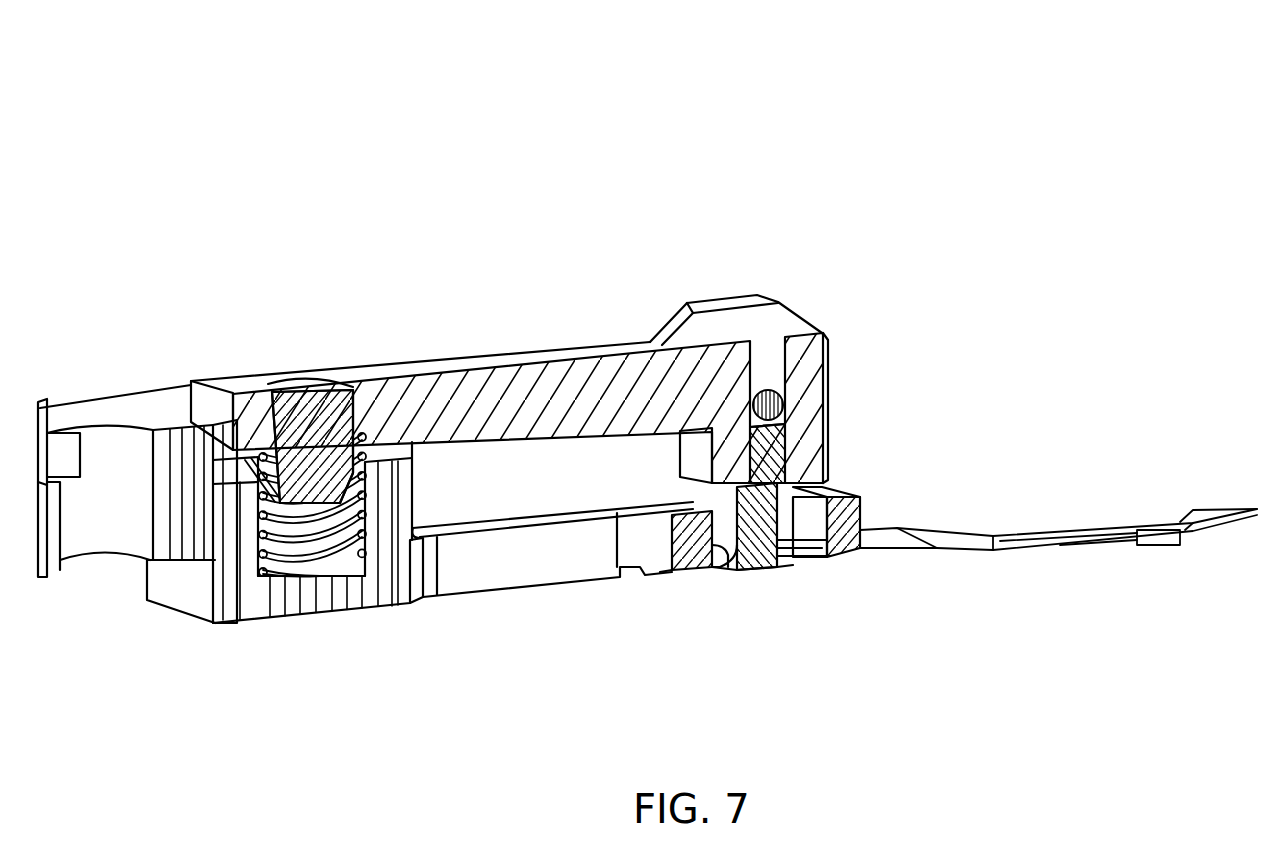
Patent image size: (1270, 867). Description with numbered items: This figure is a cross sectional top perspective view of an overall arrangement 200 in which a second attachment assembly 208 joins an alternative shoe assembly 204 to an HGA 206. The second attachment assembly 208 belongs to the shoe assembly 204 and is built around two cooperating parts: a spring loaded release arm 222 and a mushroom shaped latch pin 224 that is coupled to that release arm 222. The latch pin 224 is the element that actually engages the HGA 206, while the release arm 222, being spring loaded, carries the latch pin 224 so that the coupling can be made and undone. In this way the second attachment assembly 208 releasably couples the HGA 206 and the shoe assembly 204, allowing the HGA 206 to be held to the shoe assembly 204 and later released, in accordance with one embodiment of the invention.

The sensor assembly 200 is at (840, 108).
The shoe assembly 204 is at (85, 400).
The HGA 206 is at (947, 530).
The second attachment assembly 208 is at (785, 235).
The spring loaded release arm 222 is at (421, 362).
The mushroom shaped latch pin 224 is at (760, 567).